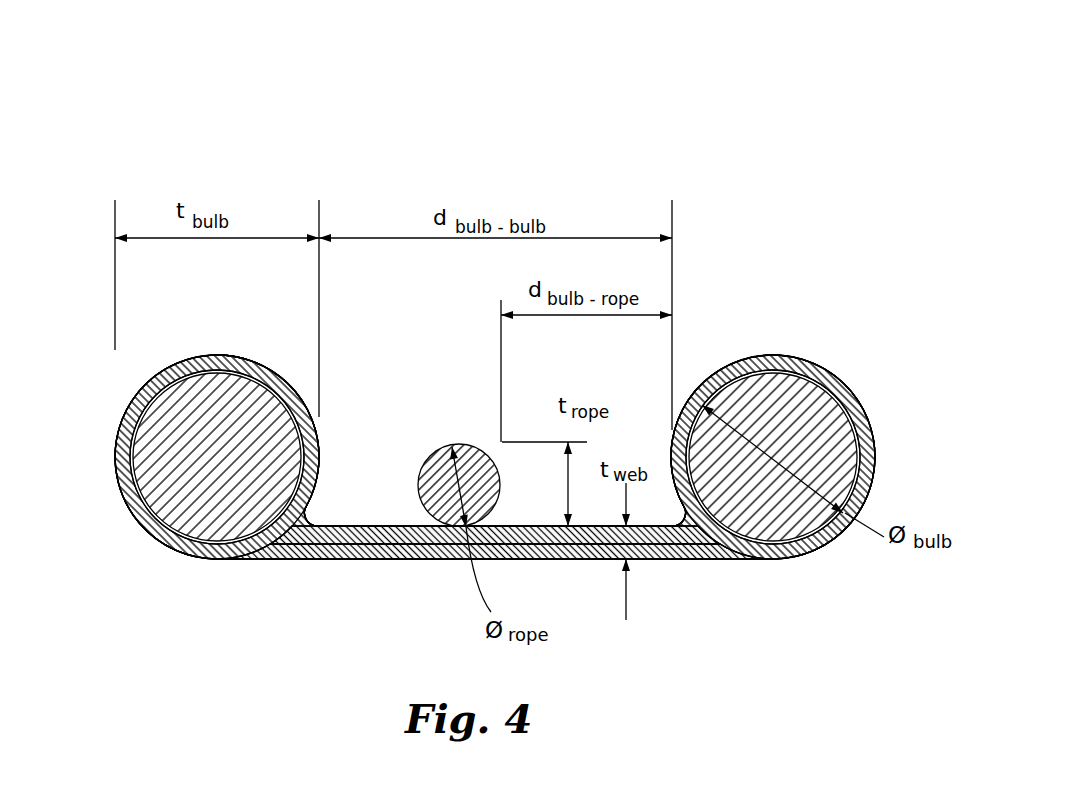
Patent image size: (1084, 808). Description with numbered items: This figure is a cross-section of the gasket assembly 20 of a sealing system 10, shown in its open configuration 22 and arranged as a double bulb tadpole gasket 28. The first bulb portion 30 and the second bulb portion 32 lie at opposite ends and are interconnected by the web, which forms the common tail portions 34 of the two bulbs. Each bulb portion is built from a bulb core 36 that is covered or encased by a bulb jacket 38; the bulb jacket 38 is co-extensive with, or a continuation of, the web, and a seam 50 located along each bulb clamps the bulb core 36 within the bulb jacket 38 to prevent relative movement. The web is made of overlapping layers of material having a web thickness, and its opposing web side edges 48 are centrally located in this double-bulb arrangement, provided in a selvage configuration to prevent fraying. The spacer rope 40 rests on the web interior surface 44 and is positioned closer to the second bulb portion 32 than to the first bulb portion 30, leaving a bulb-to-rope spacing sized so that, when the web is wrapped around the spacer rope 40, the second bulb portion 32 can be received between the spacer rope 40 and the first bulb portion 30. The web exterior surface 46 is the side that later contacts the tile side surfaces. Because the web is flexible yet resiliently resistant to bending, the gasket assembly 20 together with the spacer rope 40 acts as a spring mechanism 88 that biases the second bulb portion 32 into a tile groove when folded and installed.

The sealing system 10 is at (636, 74).
The gasket assembly 20 is at (752, 236).
The open configuration 22 is at (495, 457).
The double bulb tadpole gasket 28 is at (495, 457).
The spring mechanism 88 is at (495, 457).
The first bulb portion 30 is at (845, 392).
The second bulb portion 32 is at (130, 404).
The common tail portions 34 is at (495, 554).
The bulb core 36 is at (172, 484).
The bulb jacket 38 is at (125, 462).
The spacer rope 40 is at (430, 480).
The web interior surface 44 is at (362, 526).
The web exterior surface 46 is at (427, 560).
The web side edges 48 is at (500, 527).
The seam 50 is at (313, 538).